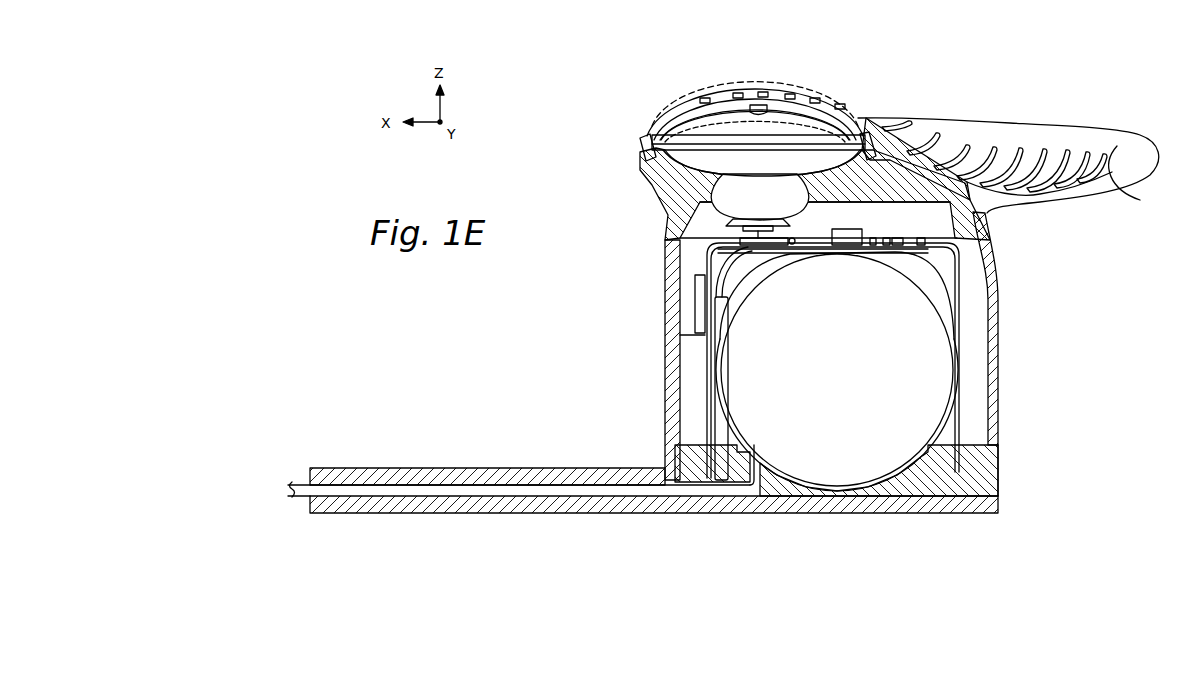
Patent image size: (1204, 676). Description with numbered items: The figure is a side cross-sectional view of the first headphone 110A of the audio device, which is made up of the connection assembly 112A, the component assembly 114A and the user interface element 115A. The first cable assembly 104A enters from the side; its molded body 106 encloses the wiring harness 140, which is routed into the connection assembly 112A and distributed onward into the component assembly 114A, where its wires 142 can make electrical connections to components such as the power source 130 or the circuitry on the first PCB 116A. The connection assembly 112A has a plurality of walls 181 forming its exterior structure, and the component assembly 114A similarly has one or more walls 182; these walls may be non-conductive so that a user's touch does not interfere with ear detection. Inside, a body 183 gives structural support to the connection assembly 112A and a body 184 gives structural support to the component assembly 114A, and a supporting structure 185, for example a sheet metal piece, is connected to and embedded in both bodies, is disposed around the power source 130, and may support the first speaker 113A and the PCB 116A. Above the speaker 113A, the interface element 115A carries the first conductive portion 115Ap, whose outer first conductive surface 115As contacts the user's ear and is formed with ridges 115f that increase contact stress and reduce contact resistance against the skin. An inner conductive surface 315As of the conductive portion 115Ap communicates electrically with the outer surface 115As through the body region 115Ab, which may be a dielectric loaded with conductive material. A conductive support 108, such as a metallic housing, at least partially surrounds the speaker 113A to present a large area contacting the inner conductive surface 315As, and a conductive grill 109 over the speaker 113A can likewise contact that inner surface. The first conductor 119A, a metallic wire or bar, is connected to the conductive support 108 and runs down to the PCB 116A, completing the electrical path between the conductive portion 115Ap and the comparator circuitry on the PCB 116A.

The first cable assembly 104A is at (643, 497).
The body 106 is at (408, 513).
The wiring harness 140 is at (548, 490).
The connection assembly 112A is at (804, 337).
The first conductor 119A is at (878, 220).
The walls 182 is at (665, 297).
The supporting structure 185 is at (985, 270).
The walls 181 is at (673, 445).
The body 183 is at (968, 456).
The body 184 is at (978, 365).
The power source 130 is at (850, 375).
The first PCB 116A is at (908, 253).
The wires 142 is at (767, 257).
The conductive grill 109 is at (827, 113).
The first headphone 110A is at (781, 137).
The first conductive portion 115Ap is at (640, 92).
The ridges 115f is at (704, 80).
The first speaker 113A is at (737, 130).
The body region 115Ab is at (780, 104).
The first conductive surface 115As is at (757, 93).
The inner conductive surface 315As is at (645, 135).
The conductive support 108 is at (641, 151).
The user interface element 115A is at (1125, 192).
The component assembly 114A is at (1030, 414).